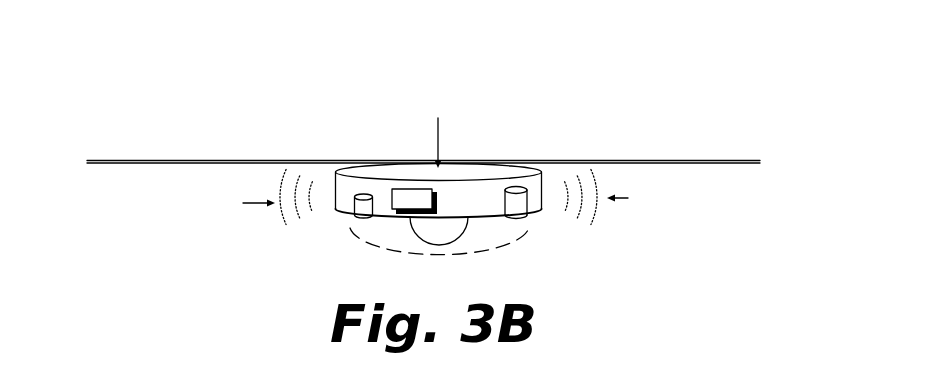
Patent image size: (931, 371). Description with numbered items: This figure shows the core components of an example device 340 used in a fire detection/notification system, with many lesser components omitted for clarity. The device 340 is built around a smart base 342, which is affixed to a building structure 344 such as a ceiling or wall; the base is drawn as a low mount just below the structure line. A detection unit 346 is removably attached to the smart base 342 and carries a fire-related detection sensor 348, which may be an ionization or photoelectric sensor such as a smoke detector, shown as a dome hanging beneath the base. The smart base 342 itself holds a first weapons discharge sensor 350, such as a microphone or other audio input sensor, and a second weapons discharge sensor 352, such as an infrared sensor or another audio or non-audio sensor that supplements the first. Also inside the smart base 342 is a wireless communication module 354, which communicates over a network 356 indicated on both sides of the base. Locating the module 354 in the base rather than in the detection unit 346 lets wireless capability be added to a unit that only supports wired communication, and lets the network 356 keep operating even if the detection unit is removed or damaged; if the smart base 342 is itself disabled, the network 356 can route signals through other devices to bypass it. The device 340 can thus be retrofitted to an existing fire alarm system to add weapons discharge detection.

The example device 340 is at (216, 80).
The smart base 342 is at (547, 90).
The building structure 344 is at (195, 130).
The detection unit 346 is at (503, 242).
The fire-related detection sensor 348 is at (437, 244).
The first weapons discharge sensor 350 is at (361, 217).
The second weapons discharge sensor 352 is at (516, 217).
The wireless communication module 354 is at (410, 189).
The network 356 is at (152, 208).